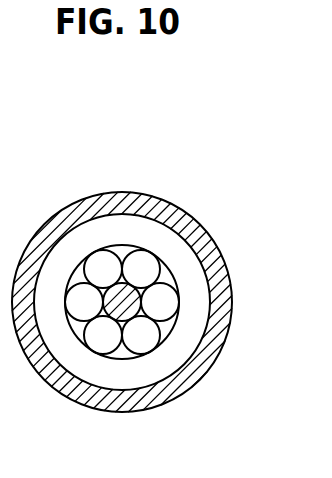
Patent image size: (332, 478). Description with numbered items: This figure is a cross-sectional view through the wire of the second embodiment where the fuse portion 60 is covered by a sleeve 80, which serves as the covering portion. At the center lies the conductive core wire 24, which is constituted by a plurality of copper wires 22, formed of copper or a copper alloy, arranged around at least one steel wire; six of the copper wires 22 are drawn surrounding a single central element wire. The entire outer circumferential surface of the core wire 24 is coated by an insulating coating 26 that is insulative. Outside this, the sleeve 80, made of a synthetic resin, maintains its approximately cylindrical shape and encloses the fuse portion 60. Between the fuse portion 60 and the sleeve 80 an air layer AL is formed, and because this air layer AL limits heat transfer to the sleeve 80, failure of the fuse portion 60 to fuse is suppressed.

The copper wires 22 is at (141, 263).
The core wire 24 is at (189, 312).
The insulating coating 26 is at (175, 253).
The fuse portion 60 is at (127, 305).
The sleeve 80 is at (218, 268).
The air layer AL is at (103, 370).